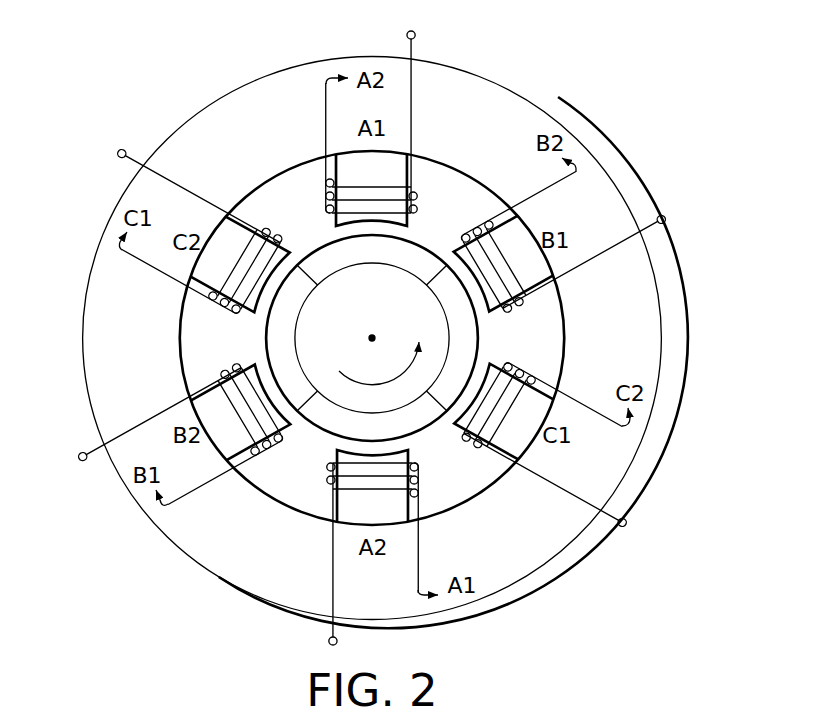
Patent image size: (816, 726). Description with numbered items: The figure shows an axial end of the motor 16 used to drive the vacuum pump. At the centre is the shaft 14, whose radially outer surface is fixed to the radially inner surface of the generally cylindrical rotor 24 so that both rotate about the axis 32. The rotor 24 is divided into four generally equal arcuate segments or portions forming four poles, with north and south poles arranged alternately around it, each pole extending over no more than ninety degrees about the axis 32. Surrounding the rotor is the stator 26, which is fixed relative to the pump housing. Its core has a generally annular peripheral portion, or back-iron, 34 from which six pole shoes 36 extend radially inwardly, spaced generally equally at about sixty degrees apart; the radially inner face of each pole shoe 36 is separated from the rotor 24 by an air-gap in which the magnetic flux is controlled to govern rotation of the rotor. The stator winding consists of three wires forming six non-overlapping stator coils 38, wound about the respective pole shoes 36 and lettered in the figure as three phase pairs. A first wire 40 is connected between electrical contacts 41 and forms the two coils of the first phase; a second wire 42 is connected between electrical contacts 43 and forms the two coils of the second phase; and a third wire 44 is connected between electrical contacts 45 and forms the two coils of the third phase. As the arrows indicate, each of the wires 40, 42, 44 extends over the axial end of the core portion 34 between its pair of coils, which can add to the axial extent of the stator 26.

The shaft 14 is at (320, 351).
The motor 16 is at (548, 600).
The rotor 24 is at (447, 262).
The stator 26 is at (515, 100).
The axis 32 is at (375, 336).
The peripheral portion 34 is at (663, 338).
The pole shoe 36 is at (246, 312).
The stator coil 38 is at (498, 305).
The first wire 40 is at (325, 90).
The electrical contacts 41 is at (414, 35).
The second wire 42 is at (598, 262).
The electrical contacts 43 is at (662, 222).
The third wire 44 is at (186, 192).
The electrical contacts 45 is at (124, 152).